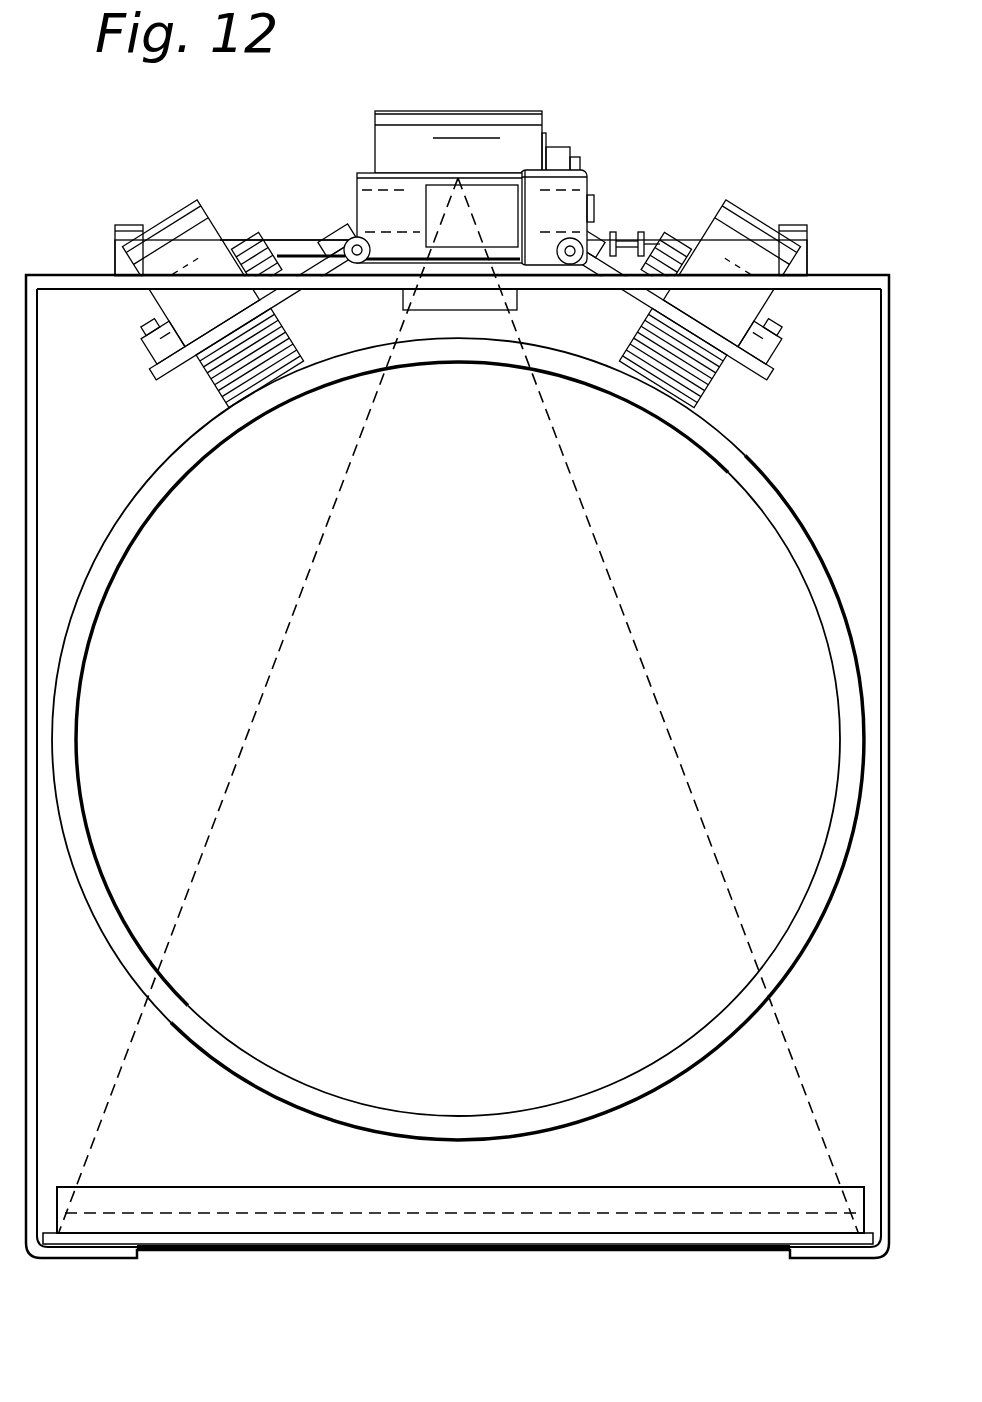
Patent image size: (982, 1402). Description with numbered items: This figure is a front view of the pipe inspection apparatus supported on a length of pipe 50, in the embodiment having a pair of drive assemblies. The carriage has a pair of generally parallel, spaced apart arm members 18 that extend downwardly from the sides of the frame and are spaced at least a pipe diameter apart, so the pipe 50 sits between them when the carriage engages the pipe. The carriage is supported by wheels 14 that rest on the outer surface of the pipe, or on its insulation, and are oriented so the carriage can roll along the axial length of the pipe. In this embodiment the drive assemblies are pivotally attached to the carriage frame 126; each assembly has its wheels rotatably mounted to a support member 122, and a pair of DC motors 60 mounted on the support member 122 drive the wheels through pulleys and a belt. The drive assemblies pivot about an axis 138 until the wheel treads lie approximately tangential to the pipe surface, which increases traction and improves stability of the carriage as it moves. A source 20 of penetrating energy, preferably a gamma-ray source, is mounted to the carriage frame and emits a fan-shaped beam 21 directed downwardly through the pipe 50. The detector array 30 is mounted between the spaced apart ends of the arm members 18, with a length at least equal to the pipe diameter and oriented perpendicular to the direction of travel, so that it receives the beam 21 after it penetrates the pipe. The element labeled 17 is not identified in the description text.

The wheels 14 is at (212, 400).
The link arm 17 is at (305, 255).
The arm members 18 is at (38, 752).
The source of penetrating energy 20 is at (495, 128).
The fan-shaped beam 21 is at (623, 609).
The detector array 30 is at (338, 1246).
The pipe 50 is at (331, 1096).
The DC motors 60 is at (253, 257).
The support member 122 is at (298, 296).
The carriage frame 126 is at (747, 215).
The pivot axis 138 is at (348, 240).